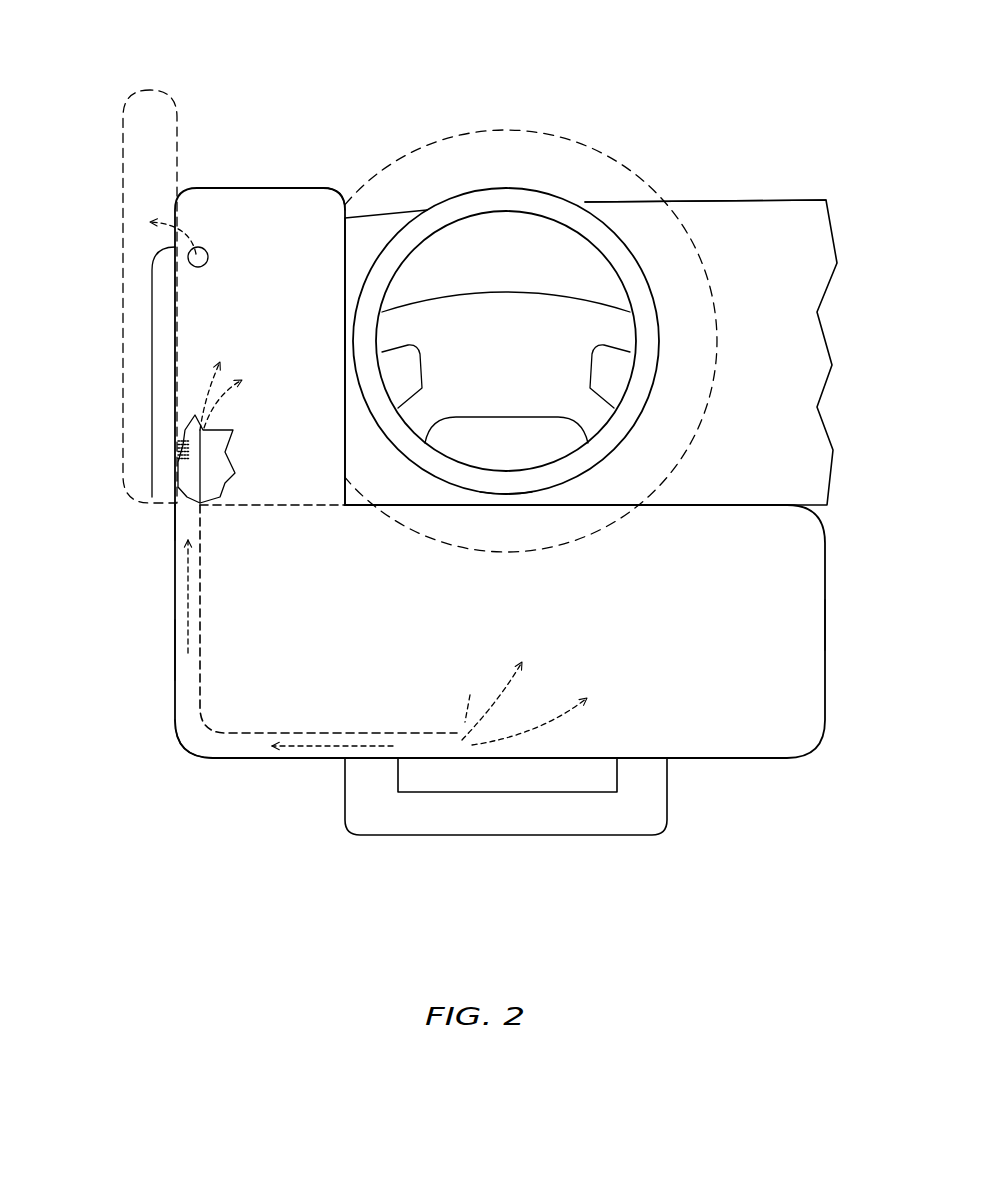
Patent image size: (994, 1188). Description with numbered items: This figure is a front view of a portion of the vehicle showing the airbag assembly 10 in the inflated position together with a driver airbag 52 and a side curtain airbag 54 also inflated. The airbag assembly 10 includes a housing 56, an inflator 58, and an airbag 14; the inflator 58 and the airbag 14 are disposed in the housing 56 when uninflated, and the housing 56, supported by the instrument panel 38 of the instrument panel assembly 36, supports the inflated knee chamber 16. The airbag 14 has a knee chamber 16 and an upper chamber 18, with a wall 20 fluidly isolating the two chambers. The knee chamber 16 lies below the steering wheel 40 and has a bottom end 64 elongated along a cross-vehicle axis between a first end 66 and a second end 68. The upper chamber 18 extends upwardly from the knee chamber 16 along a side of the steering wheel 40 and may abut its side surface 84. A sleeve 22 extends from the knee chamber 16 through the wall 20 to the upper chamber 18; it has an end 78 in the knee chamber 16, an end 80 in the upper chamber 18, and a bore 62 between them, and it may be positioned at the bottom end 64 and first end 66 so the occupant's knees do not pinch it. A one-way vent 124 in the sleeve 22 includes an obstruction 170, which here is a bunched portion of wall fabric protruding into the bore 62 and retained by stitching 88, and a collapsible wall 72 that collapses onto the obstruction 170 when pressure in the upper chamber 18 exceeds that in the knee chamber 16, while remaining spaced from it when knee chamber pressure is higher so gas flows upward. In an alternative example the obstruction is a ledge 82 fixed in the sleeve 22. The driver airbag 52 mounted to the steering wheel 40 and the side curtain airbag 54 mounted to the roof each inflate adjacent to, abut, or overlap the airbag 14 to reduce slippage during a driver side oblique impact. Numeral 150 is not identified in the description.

The airbag assembly 10 is at (315, 70).
The airbag 14 is at (213, 186).
The knee chamber 16 is at (826, 572).
The upper chamber 18 is at (333, 188).
The wall 20 is at (295, 510).
The sleeve 22 is at (240, 736).
The instrument panel assembly 36 is at (830, 196).
The instrument panel 38 is at (752, 200).
The steering wheel 40 is at (472, 190).
The driver airbag 52 is at (607, 140).
The side curtain airbag 54 is at (123, 148).
The housing 56 is at (370, 836).
The inflator 58 is at (585, 793).
The bore 62 is at (180, 725).
The bottom end 64 is at (700, 760).
The first end 66 is at (175, 650).
The second end 68 is at (826, 622).
The collapsible wall 72 is at (195, 432).
The end 78 is at (455, 730).
The end 80 is at (207, 472).
The ledge 82 is at (175, 515).
The side surface 84 is at (345, 325).
The stitching 88 is at (195, 458).
The one-way vent 124 is at (170, 448).
The steering wheel rim 150 is at (506, 494).
The obstruction 170 is at (180, 445).